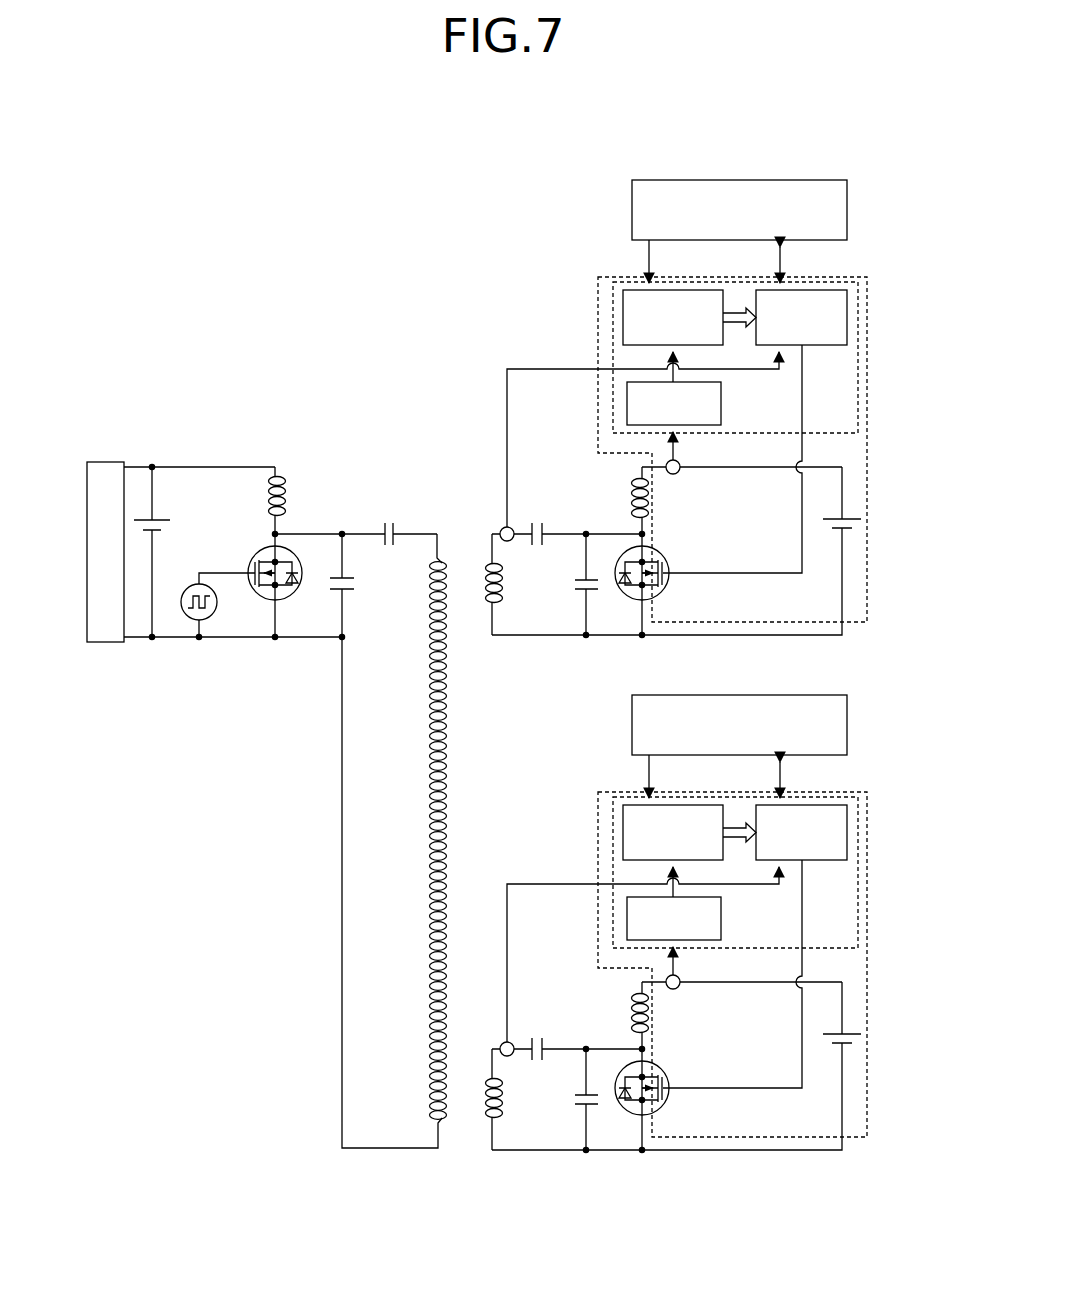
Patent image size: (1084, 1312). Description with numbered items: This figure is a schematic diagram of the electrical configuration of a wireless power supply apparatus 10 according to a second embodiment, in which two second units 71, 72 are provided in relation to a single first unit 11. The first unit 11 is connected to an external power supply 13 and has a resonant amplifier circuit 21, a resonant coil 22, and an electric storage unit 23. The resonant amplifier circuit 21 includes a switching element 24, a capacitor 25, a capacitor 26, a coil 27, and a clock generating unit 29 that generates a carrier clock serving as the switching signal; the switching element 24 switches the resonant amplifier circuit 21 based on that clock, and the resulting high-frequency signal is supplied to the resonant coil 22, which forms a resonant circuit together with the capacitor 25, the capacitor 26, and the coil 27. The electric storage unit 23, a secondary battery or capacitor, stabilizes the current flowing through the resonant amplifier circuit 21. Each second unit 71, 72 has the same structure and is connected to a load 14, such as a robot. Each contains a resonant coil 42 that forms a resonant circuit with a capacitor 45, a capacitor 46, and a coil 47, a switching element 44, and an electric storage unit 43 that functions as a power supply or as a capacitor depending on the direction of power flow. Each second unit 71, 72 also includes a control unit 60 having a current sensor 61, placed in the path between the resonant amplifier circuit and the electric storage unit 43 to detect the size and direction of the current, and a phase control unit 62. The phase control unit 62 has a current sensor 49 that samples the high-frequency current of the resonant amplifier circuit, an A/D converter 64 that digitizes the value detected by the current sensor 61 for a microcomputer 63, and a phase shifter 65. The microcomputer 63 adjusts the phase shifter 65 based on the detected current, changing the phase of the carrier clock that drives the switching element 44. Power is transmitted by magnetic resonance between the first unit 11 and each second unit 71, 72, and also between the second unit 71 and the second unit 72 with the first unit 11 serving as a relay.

The wireless power supply apparatus 10 is at (485, 198).
The first unit 11 is at (212, 672).
The power supply 13 is at (103, 461).
The load 14 is at (733, 180).
The resonant amplifier circuit 21 is at (312, 532).
The resonant coil 22 is at (444, 563).
The electric storage unit 23 is at (168, 518).
The switching element 24 is at (260, 600).
The capacitor 25 is at (333, 593).
The capacitor 26 is at (395, 523).
The coil 27 is at (284, 493).
The clock generating unit 29 is at (188, 620).
The resonant coil 42 is at (487, 611).
The electric storage unit 43 is at (845, 519).
The switching element 44 is at (628, 598).
The capacitor 45 is at (537, 522).
The capacitor 46 is at (577, 597).
The coil 47 is at (633, 496).
The current sensor 49 is at (502, 526).
The control unit 60 is at (598, 304).
The current sensor 61 is at (667, 463).
The phase control unit 62 is at (613, 355).
The microcomputer 63 is at (623, 332).
The A/D converter 64 is at (627, 400).
The phase shifter 65 is at (847, 318).
The second unit 71 is at (883, 767).
The second unit 72 is at (881, 212).